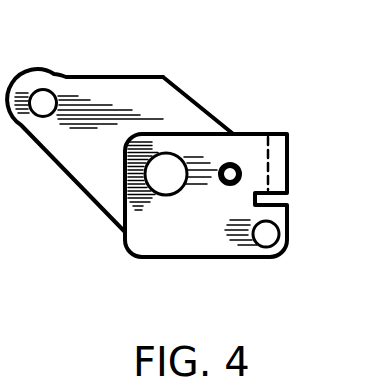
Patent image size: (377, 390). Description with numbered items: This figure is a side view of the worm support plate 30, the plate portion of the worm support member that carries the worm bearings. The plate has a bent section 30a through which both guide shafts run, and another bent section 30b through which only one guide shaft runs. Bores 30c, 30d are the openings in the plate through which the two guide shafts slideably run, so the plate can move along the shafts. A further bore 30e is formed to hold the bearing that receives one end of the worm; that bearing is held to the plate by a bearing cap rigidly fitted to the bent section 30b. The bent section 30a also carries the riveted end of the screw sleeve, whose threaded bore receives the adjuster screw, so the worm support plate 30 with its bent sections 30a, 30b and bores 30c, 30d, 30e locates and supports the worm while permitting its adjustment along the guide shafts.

The worm support plate 30 is at (176, 168).
The bent section 30a is at (116, 125).
The bent section 30b is at (230, 168).
The bore 30c is at (274, 241).
The bore 30d is at (40, 97).
The bore 30e is at (163, 170).